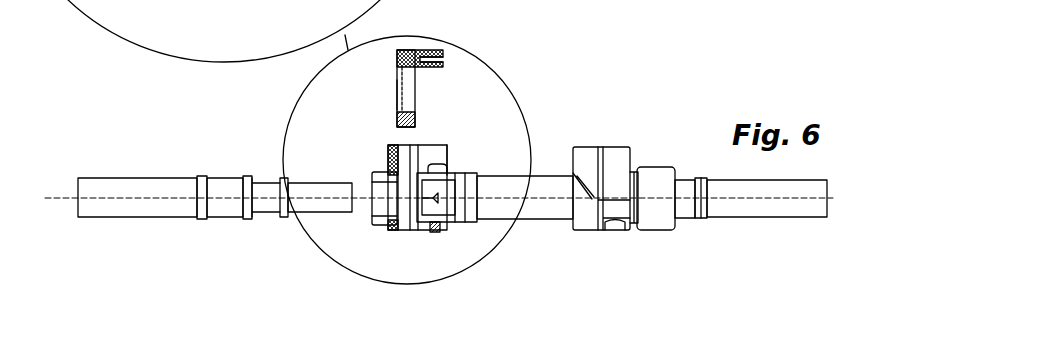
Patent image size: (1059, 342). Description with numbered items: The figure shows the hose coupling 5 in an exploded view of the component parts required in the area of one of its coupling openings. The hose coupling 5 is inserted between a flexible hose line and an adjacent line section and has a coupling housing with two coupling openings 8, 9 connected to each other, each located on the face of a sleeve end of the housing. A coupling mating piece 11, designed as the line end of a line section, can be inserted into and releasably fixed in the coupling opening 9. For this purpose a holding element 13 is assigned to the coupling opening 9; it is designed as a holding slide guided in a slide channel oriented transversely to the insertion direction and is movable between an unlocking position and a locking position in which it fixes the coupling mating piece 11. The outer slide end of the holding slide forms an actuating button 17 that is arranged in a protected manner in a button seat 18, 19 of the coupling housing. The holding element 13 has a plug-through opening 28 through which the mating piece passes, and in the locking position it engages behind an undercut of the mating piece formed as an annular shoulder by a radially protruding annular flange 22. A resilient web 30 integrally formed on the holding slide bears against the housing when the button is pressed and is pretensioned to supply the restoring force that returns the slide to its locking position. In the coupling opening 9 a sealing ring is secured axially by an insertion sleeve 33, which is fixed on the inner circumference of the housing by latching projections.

The hose coupling 5 is at (542, 158).
The coupling opening 8 is at (687, 172).
The coupling opening 9 is at (372, 194).
The coupling mating piece 11 is at (323, 205).
The holding element 13 is at (429, 66).
The actuating button 17 is at (422, 50).
The button seat 18 is at (622, 168).
The button seat 19 is at (448, 156).
The annular flange 22 is at (285, 218).
The plug-through opening 28 is at (398, 98).
The resilient web 30 is at (445, 66).
The insertion sleeve 33 is at (437, 223).